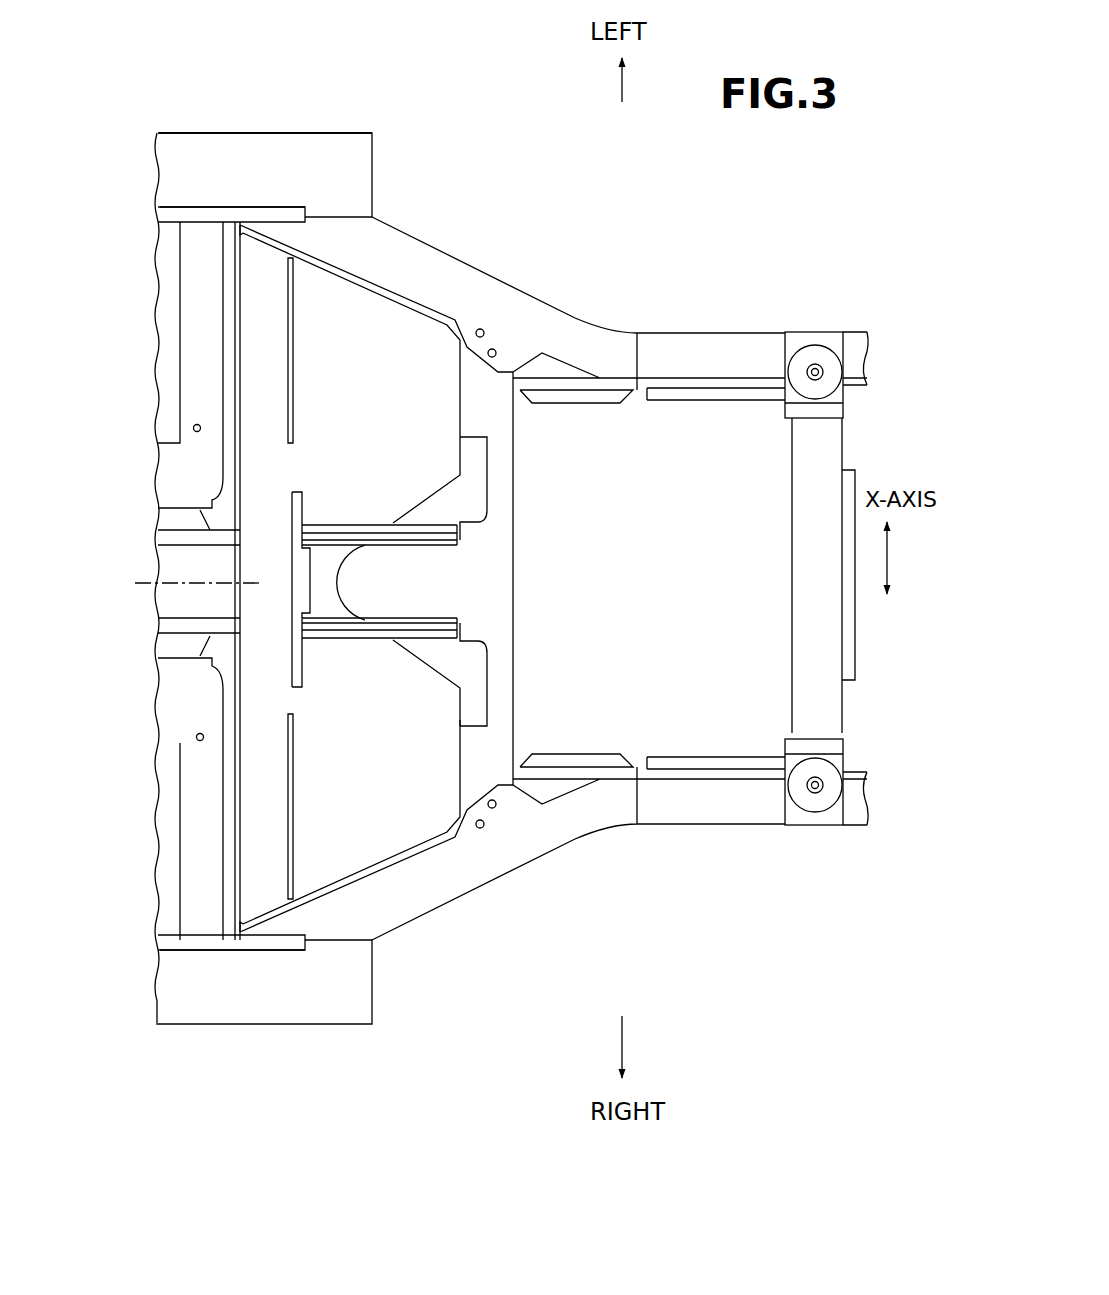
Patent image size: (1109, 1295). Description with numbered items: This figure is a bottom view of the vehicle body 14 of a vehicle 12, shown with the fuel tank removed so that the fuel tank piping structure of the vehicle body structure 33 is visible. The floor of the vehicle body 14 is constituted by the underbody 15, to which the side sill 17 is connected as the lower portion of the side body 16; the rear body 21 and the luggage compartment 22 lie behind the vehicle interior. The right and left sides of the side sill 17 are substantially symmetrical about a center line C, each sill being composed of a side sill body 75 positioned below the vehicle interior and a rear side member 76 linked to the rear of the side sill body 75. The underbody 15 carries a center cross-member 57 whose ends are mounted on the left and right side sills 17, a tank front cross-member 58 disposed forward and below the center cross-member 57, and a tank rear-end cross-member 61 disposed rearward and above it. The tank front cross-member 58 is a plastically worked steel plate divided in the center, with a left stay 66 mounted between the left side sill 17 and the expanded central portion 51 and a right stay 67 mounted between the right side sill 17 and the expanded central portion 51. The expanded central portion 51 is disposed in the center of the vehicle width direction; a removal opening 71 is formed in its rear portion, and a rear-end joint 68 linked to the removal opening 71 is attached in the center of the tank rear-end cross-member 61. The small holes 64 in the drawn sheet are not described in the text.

The vehicle 12 is at (288, 102).
The vehicle body 14 is at (350, 127).
The underbody 15 is at (240, 300).
The side body 16 is at (195, 133).
The side sill 17 is at (373, 155).
The rear body 21 is at (850, 277).
The luggage compartment 22 is at (703, 445).
The vehicle body structure 33 is at (438, 572).
The expanded central portion 51 is at (330, 555).
The center cross-member 57 is at (292, 693).
The tank front cross-member 58 is at (180, 356).
The tank rear-end cross-member 61 is at (514, 678).
The hole 64 is at (193, 427).
The left stay 66 is at (228, 352).
The right stay 67 is at (228, 798).
The rear-end joint 68 is at (482, 638).
The removal opening 71 is at (340, 583).
The side sill body 75 is at (175, 133).
The rear side member 76 is at (467, 233).
The center line C is at (152, 581).